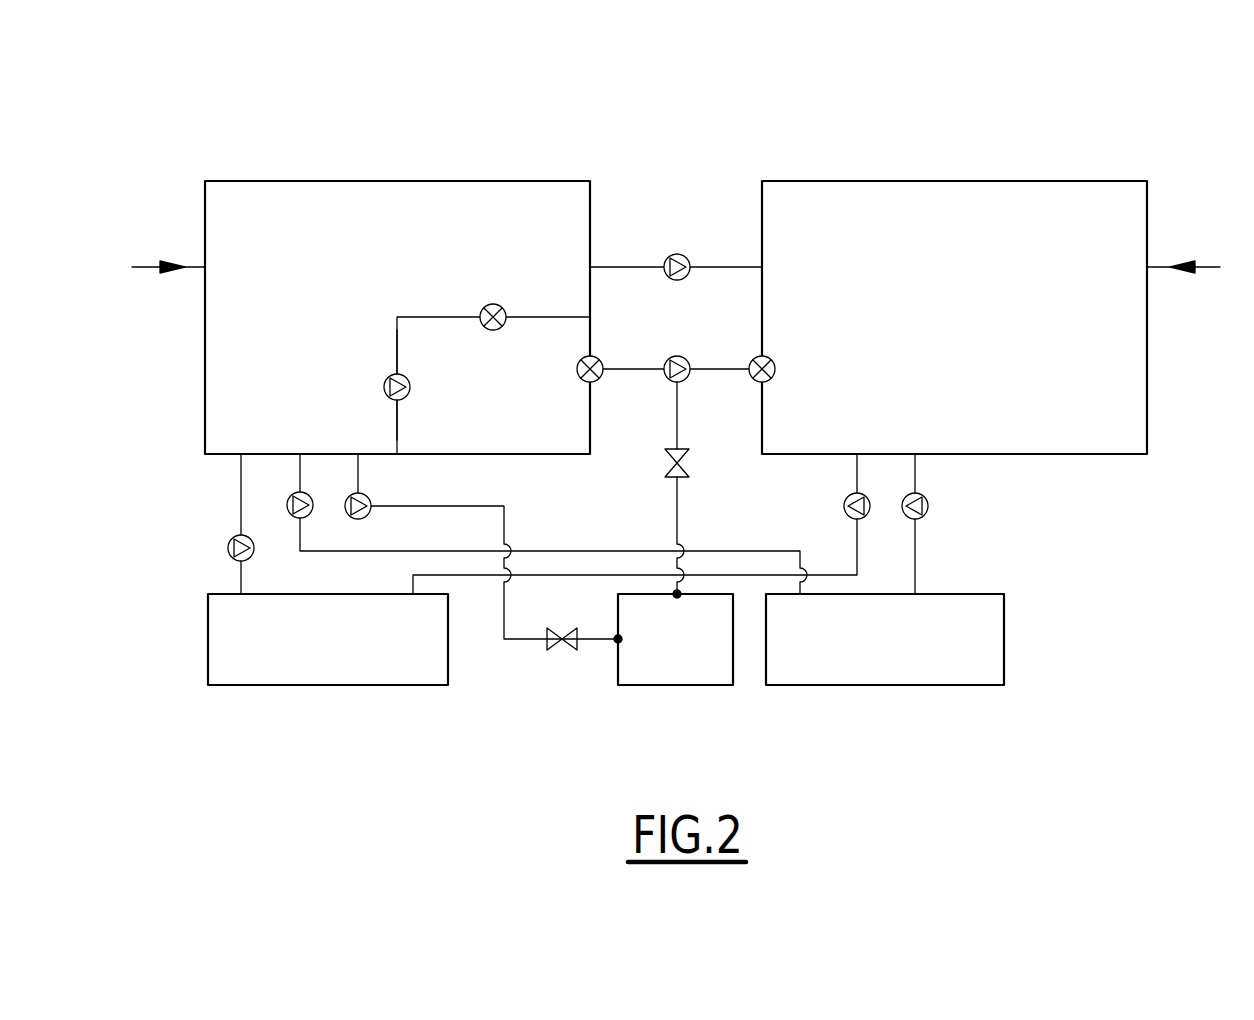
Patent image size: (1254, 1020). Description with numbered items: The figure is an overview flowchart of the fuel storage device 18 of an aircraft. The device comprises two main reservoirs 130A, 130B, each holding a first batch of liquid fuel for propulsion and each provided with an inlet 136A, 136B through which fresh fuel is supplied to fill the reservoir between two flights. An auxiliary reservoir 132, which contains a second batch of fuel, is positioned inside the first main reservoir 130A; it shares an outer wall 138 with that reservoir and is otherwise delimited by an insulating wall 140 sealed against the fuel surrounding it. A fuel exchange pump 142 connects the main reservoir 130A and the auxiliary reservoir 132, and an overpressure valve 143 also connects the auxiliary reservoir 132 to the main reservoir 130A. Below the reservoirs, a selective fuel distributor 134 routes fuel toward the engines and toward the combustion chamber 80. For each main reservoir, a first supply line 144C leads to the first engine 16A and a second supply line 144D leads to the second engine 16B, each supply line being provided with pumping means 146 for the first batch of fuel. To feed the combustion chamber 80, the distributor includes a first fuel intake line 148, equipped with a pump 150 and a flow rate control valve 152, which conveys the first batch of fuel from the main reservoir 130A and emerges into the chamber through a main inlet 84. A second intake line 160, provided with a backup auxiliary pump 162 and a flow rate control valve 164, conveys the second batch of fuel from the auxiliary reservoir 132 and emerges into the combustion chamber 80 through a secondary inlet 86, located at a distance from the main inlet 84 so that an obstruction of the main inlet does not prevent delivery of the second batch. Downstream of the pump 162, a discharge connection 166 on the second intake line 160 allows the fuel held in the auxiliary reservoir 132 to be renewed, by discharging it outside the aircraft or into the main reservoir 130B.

The fuel storage device 18 is at (1136, 120).
The first main reservoir 130A is at (287, 180).
The second main reservoir 130B is at (977, 180).
The inlet of the first main reservoir 136A is at (148, 262).
The inlet of the second main reservoir 136B is at (1205, 262).
The auxiliary reservoir 132 is at (425, 300).
The overpressure valve 143 is at (493, 303).
The insulating wall 140 is at (396, 343).
The fuel exchange pump 142 is at (383, 384).
The backup auxiliary pump 162 is at (670, 356).
The discharge connection 166 is at (719, 367).
The outer wall 138 is at (591, 405).
The second intake line 160 is at (695, 436).
The flow rate control valve 164 is at (670, 462).
The pumping means 146 is at (286, 498).
The first supply line 144C is at (238, 522).
The second supply line 144D is at (303, 540).
The pump 150 is at (370, 494).
The first fuel intake line 148 is at (505, 527).
The flow rate control valve 152 is at (557, 652).
The main inlet 84 is at (612, 643).
The secondary inlet 86 is at (678, 598).
The combustion chamber 80 is at (698, 687).
The first engine 16A is at (247, 687).
The second engine 16B is at (903, 687).
The selective fuel distributor 134 is at (1102, 564).